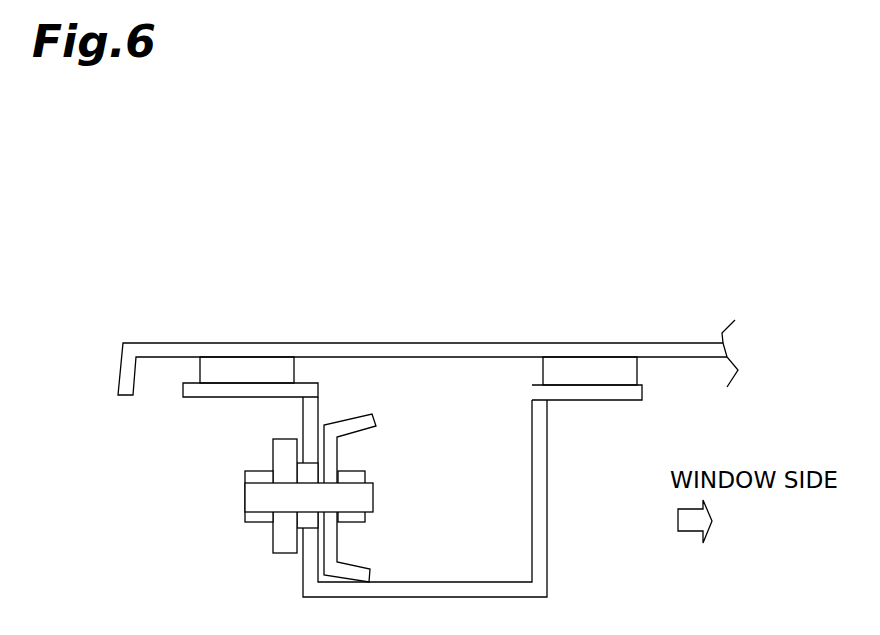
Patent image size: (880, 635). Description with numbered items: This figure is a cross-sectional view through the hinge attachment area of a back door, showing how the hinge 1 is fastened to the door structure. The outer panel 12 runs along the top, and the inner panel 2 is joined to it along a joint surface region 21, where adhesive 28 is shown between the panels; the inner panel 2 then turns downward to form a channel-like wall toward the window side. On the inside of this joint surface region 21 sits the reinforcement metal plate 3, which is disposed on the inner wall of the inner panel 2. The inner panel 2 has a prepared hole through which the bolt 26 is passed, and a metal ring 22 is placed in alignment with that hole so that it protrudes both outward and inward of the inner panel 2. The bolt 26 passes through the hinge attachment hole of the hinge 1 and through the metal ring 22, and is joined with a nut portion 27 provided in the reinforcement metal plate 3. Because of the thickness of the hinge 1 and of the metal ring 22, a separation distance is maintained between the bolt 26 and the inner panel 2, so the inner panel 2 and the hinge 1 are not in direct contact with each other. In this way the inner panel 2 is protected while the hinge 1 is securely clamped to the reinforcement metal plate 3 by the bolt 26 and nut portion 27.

The hinge 1 is at (288, 535).
The inner panel 2 is at (543, 462).
The reinforcement metal plate 3 is at (327, 458).
The outer panel 12 is at (355, 352).
The joint surface region 21 is at (222, 392).
The metal ring 22 is at (312, 472).
The bolt 26 is at (262, 500).
The nut portion 27 is at (350, 518).
The adhesive 28 is at (243, 372).